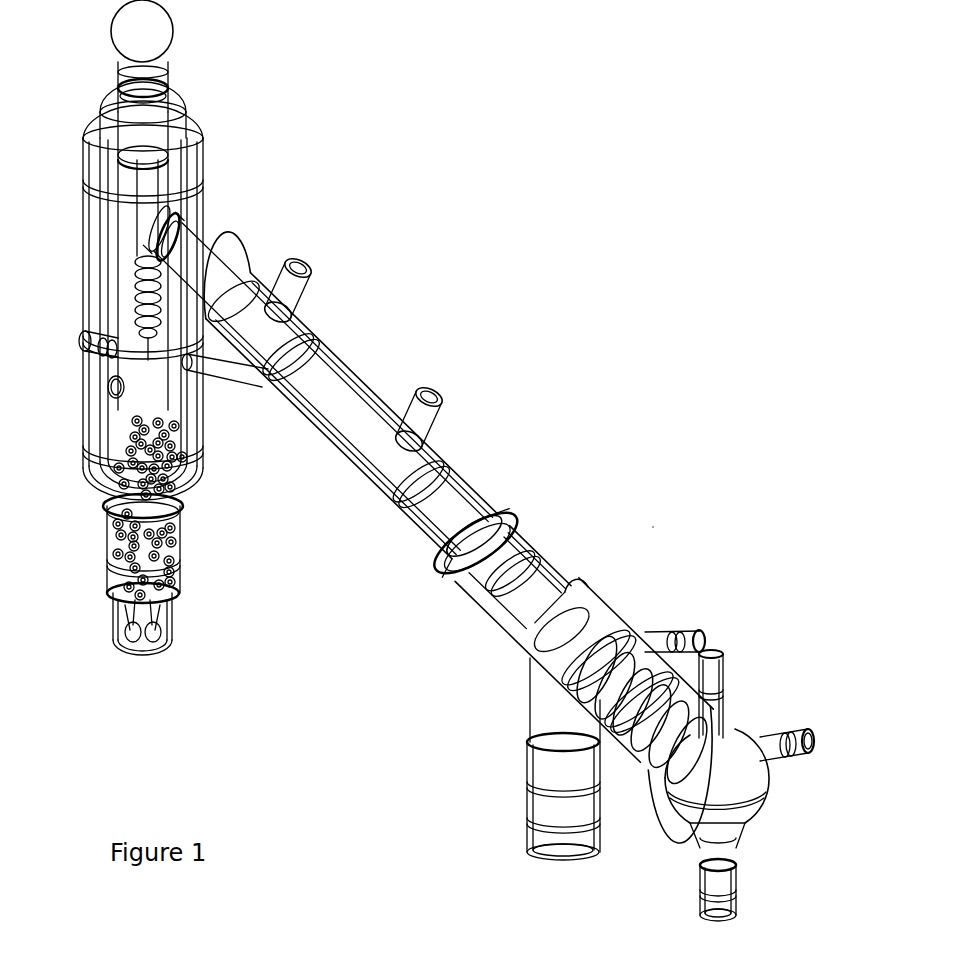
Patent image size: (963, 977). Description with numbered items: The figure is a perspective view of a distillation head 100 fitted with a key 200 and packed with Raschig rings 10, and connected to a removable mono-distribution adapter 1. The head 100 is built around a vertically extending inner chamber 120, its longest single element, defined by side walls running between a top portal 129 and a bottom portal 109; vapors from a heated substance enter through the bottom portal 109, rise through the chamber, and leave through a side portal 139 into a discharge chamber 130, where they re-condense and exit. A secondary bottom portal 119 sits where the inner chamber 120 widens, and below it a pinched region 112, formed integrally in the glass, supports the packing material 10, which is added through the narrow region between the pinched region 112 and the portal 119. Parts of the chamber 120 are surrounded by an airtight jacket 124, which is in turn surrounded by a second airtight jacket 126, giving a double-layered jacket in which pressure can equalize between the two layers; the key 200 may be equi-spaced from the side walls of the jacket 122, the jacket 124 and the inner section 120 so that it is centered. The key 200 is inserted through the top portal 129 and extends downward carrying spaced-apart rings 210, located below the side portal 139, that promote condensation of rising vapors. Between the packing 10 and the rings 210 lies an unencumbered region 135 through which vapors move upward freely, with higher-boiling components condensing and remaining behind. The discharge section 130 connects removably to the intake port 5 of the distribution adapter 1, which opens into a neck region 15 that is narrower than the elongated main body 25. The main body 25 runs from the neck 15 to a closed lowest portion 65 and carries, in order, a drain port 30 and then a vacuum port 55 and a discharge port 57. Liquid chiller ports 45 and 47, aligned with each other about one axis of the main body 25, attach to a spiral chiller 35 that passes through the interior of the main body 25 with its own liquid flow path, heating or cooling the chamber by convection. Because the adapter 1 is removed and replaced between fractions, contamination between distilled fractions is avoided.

The distribution adapter 1 is at (653, 527).
The distillation head 100 is at (70, 44).
The key 200 is at (164, 37).
The top portal 129 is at (122, 91).
The jacket 122 is at (84, 190).
The airtight jacket 124 is at (103, 241).
The side portal 139 is at (186, 224).
The rings 210 is at (136, 283).
The vertically extending inner chamber 120 is at (119, 323).
The unencumbered region 135 is at (123, 364).
The second airtight jacket 126 is at (110, 390).
The secondary bottom portal 119 is at (105, 507).
The Raschig rings 10 is at (165, 540).
The pinched region 112 is at (119, 626).
The bottom portal 109 is at (134, 651).
The discharge chamber 130 is at (341, 392).
The inlet portal 5 is at (496, 511).
The neck region 15 is at (527, 553).
The main body region 25 is at (584, 607).
The spiral chiller 35 is at (633, 772).
The drain port 30 is at (533, 773).
The liquid chiller port 45 is at (698, 632).
The vacuum port 55 is at (718, 689).
The closed lowest portion 65 is at (744, 792).
The chiller port 47 is at (797, 745).
The discharge port 57 is at (718, 865).